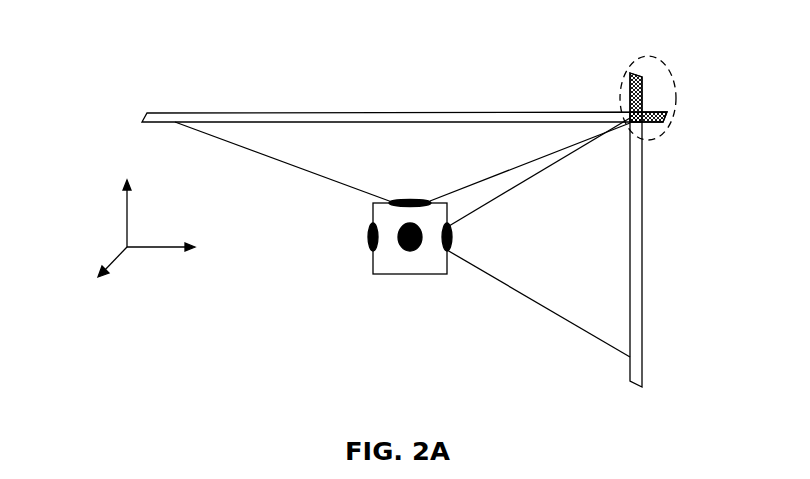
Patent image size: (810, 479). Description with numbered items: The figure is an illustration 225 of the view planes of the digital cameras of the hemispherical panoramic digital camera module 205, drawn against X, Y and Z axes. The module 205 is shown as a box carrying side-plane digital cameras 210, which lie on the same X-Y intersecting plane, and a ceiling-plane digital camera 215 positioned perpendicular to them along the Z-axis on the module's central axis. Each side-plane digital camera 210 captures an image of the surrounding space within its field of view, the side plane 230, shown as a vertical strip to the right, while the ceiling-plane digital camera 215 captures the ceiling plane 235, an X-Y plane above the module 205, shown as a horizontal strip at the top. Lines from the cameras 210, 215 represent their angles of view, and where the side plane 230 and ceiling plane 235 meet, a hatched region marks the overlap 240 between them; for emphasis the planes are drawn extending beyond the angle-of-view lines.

The illustration 225 is at (55, 33).
The hemispherical panoramic digital camera module 205 is at (429, 238).
The side-plane digital camera 210 is at (466, 237).
The ceiling-plane digital camera 215 is at (410, 191).
The side plane 230 is at (691, 230).
The ceiling plane 235 is at (404, 102).
The overlap 240 is at (683, 95).